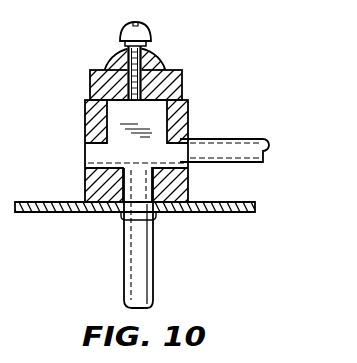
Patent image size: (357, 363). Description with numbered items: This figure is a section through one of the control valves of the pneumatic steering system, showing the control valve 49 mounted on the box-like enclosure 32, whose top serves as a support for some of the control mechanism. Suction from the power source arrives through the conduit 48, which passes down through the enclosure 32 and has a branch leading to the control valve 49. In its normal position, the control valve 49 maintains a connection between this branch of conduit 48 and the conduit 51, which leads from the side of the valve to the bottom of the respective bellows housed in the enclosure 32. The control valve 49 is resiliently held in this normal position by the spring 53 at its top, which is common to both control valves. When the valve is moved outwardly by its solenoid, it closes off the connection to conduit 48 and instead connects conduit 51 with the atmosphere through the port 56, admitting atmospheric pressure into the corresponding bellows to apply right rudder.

The box-like enclosure 32 is at (73, 213).
The conduit 48 is at (153, 240).
The control valve 49 is at (90, 81).
The conduit 51 is at (223, 160).
The spring 53 is at (149, 42).
The port 56 is at (199, 137).